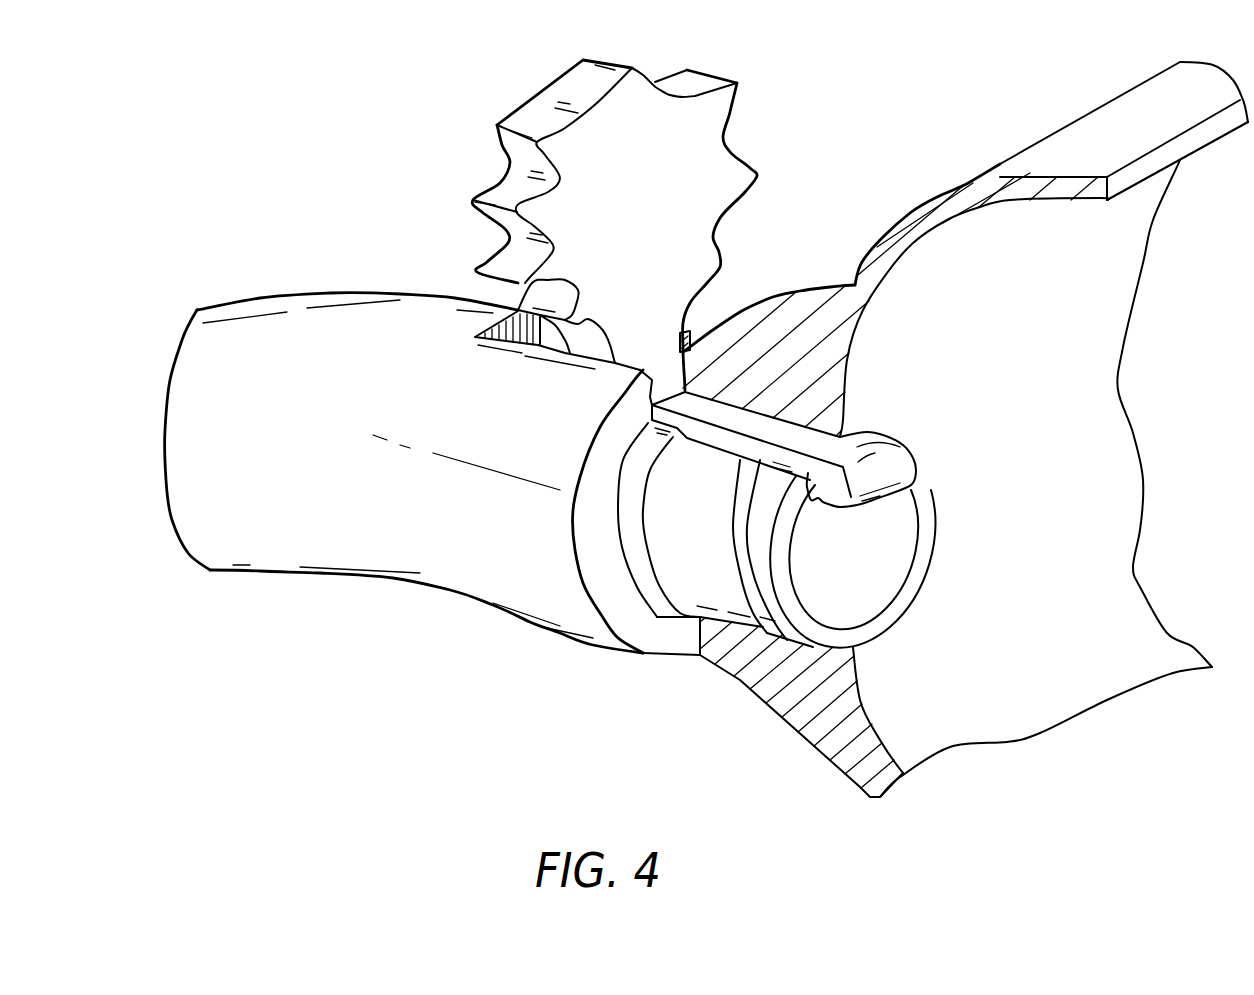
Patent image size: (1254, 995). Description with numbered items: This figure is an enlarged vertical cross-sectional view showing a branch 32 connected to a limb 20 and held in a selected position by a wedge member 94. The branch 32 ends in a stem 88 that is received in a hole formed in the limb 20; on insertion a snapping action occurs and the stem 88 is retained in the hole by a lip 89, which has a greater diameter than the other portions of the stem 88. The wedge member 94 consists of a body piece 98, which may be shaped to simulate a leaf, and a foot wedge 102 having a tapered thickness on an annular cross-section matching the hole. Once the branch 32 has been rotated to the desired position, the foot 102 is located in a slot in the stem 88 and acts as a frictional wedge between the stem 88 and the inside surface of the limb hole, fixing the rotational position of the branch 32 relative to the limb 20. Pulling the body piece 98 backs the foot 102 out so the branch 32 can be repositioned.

The limb 20 is at (1118, 100).
The branch 32 is at (265, 564).
The stem 88 is at (685, 570).
The lip 89 is at (770, 612).
The wedge member 94 is at (747, 153).
The body piece 98 is at (474, 198).
The foot wedge 102 is at (742, 413).